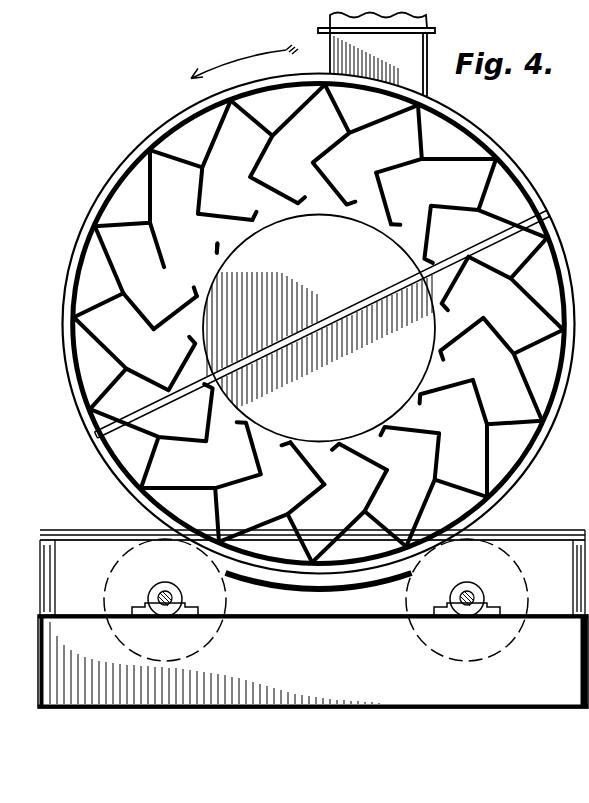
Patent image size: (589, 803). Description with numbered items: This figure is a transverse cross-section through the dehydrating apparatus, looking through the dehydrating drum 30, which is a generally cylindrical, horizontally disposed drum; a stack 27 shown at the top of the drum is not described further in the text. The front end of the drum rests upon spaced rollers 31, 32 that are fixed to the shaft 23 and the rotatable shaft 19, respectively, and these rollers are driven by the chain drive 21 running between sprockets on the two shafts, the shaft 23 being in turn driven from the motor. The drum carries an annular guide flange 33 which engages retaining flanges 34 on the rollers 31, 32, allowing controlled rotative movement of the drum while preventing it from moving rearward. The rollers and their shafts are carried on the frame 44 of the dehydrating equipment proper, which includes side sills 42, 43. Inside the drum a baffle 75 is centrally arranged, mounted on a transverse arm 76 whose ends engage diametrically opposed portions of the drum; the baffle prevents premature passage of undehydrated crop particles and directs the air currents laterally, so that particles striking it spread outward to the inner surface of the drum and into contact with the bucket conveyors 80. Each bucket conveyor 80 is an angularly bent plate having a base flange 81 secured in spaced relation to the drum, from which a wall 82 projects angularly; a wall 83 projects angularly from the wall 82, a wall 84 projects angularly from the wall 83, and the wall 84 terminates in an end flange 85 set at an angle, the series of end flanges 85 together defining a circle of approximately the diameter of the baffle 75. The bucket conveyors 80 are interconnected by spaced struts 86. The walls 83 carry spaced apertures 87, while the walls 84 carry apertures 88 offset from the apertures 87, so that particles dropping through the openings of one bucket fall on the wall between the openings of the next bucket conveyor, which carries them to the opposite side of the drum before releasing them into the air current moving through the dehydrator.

The stack 27 is at (425, 30).
The dehydrating drum 30 is at (514, 167).
The base flanges 81 is at (66, 301).
The annular guide flange 33 is at (525, 468).
The baffle 75 is at (310, 214).
The transverse arm 76 is at (452, 257).
The bucket conveyors 80 is at (194, 171).
The walls 82 is at (417, 147).
The walls 83 is at (386, 169).
The walls 84 is at (382, 189).
The end flanges 85 is at (395, 227).
The struts 86 is at (107, 251).
The apertures 87 is at (156, 240).
The apertures 88 is at (240, 208).
The frame 44 is at (40, 604).
The side sill 43 is at (71, 708).
The side sill 42 is at (579, 708).
The roller 32 is at (112, 569).
The shaft 23 is at (171, 591).
The roller 31 is at (520, 573).
The rotatable shaft 19 is at (471, 591).
The retaining flanges 34 is at (530, 597).
The chain drive 21 is at (305, 597).